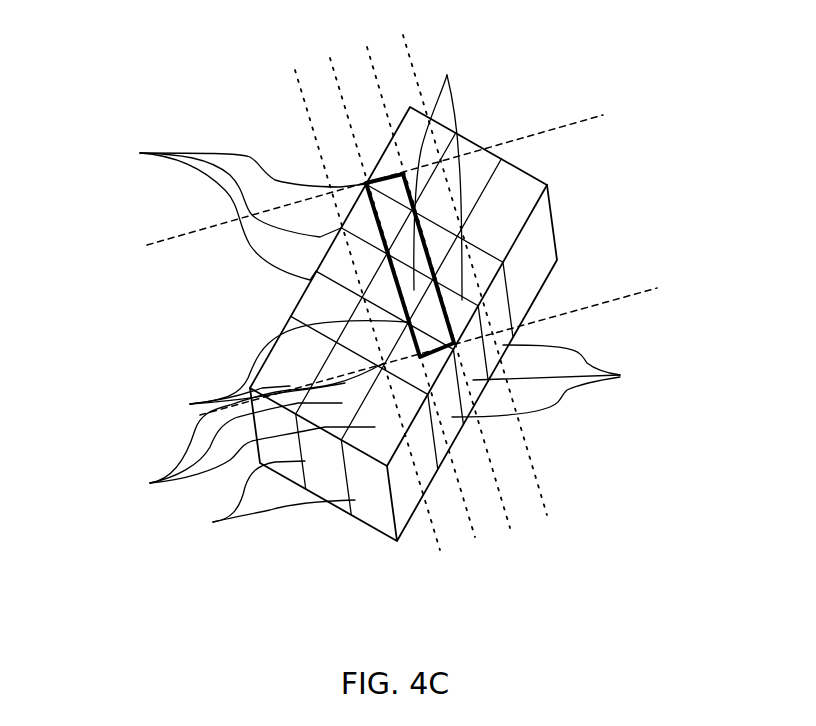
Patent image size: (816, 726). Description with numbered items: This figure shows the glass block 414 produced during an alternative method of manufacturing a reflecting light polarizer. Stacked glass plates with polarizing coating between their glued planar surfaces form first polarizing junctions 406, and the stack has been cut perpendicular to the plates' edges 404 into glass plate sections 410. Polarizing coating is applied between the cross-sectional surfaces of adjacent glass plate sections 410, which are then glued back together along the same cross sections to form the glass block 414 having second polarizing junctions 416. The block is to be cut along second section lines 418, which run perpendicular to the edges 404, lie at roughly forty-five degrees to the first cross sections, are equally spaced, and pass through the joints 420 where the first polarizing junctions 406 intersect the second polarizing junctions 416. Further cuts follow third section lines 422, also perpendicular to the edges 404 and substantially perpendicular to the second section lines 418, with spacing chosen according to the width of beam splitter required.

The edges 404 is at (150, 483).
The first polarizing junctions 406 is at (213, 522).
The glass plate sections 410 is at (620, 375).
The glass block 414 is at (522, 107).
The second polarizing junctions 416 is at (148, 153).
The second section lines 418 is at (570, 530).
The joints 420 is at (447, 135).
The third section lines 422 is at (620, 95).